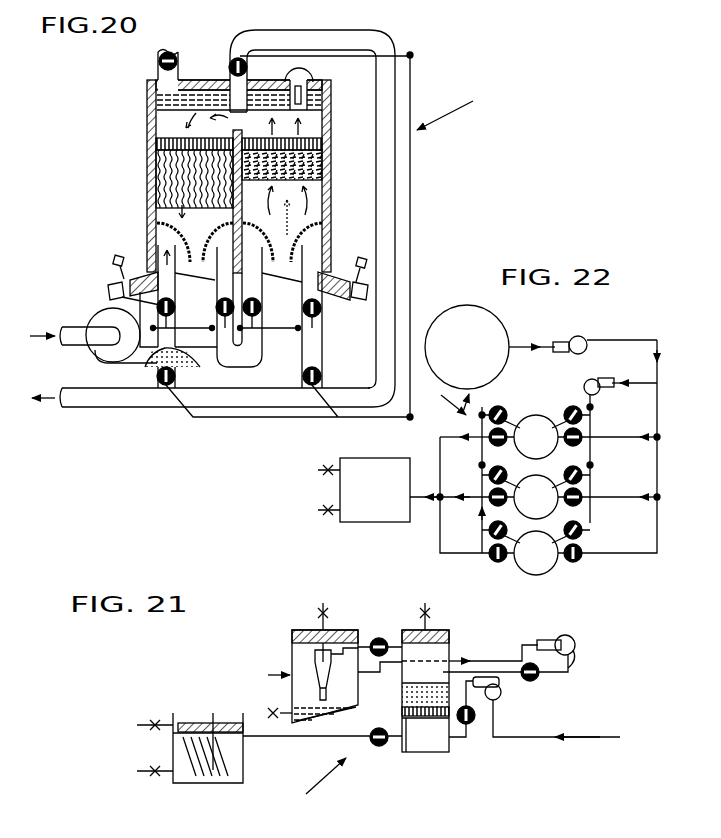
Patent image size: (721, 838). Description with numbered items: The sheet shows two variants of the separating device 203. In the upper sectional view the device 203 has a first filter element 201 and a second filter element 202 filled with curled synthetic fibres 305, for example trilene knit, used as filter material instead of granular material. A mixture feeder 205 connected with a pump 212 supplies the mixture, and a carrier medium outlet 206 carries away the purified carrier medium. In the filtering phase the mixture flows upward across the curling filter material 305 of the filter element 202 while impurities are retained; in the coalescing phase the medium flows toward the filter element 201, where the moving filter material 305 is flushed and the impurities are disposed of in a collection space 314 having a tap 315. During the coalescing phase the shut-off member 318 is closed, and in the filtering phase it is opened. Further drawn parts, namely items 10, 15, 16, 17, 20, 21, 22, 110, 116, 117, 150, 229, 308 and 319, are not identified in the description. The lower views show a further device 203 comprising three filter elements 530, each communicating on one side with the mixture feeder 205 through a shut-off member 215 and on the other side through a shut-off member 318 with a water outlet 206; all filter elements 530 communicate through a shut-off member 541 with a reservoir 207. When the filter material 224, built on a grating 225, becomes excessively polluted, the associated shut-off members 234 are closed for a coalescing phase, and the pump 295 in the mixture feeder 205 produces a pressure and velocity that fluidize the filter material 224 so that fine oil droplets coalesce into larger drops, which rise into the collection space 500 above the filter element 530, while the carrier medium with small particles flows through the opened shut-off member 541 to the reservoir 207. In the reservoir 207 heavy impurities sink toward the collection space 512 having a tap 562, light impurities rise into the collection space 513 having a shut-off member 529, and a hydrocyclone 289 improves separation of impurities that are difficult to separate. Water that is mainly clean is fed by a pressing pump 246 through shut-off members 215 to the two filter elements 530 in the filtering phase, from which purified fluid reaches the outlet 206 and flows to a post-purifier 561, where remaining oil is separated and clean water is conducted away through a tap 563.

In FIG. 20, the downcomer tube 10 is at (163, 255).
In FIG. 20, the valve 15 is at (216, 309).
In FIG. 20, the valve 16 is at (262, 312).
In FIG. 20, the U-shaped connecting tube 17 is at (290, 330).
In FIG. 20, the downcomer tube 20 is at (313, 252).
In FIG. 20, the discharge chute 21 is at (108, 292).
In FIG. 20, the discharge chute 22 is at (321, 310).
In FIG. 20, the liquid layer 110 is at (322, 98).
In FIG. 21, the liquid layer 110 is at (226, 723).
In FIG. 20, the deflector 116 is at (158, 204).
In FIG. 20, the return pipe 117 is at (332, 42).
In FIG. 20, the sensor 150 is at (300, 70).
In FIG. 20, the first filter element 201 is at (150, 183).
In FIG. 20, the second filter element 202 is at (326, 183).
In FIG. 20, the device 203 is at (361, 236).
In FIG. 22, the device 203 is at (443, 397).
In FIG. 21, the device 203 is at (320, 788).
In FIG. 20, the mixture feeder 205 is at (62, 328).
In FIG. 22, the mixture feeder 205 is at (616, 386).
In FIG. 21, the mixture feeder 205 is at (560, 735).
In FIG. 20, the carrier medium outlet 206 is at (62, 388).
In FIG. 22, the carrier medium outlet 206 is at (424, 490).
In FIG. 21, the carrier medium outlet 206 is at (290, 738).
In FIG. 22, the reservoir 207 is at (442, 322).
In FIG. 21, the reservoir 207 is at (262, 672).
In FIG. 20, the pump 212 is at (97, 322).
In FIG. 22, the shut-off member 215 is at (595, 426).
In FIG. 21, the shut-off member 215 is at (537, 680).
In FIG. 21, the filter material 224 is at (404, 709).
In FIG. 21, the grating 225 is at (410, 722).
In FIG. 20, the vent valve 229 is at (158, 58).
In FIG. 21, the vent valve 229 is at (428, 612).
In FIG. 22, the shut-off member 234 is at (573, 400).
In FIG. 21, the shut-off member 234 is at (466, 726).
In FIG. 22, the pressing pump 246 is at (576, 336).
In FIG. 21, the pressing pump 246 is at (572, 636).
In FIG. 21, the hydrocyclone 289 is at (315, 655).
In FIG. 22, the pump 295 is at (598, 374).
In FIG. 21, the pump 295 is at (546, 707).
In FIG. 20, the curled synthetic fibres 305 is at (158, 170).
In FIG. 20, the grid plate 308 is at (157, 140).
In FIG. 20, the collection space 314 is at (183, 308).
In FIG. 20, the tap 315 is at (114, 259).
In FIG. 20, the shut-off member 318 is at (228, 62).
In FIG. 22, the shut-off member 318 is at (487, 421).
In FIG. 21, the shut-off member 318 is at (380, 746).
In FIG. 20, the valve 319 is at (157, 376).
In FIG. 21, the collection space 500 is at (452, 646).
In FIG. 21, the collection space 512 is at (322, 712).
In FIG. 21, the collection space 513 is at (300, 628).
In FIG. 21, the shut-off member 529 is at (328, 612).
In FIG. 22, the filter element 530 is at (546, 402).
In FIG. 22, the shut-off member 541 is at (505, 383).
In FIG. 21, the shut-off member 541 is at (379, 638).
In FIG. 20, the post-purifier 561 is at (374, 418).
In FIG. 21, the post-purifier 561 is at (196, 718).
In FIG. 21, the tap 562 is at (273, 706).
In FIG. 22, the tap 563 is at (342, 480).
In FIG. 21, the tap 563 is at (155, 768).